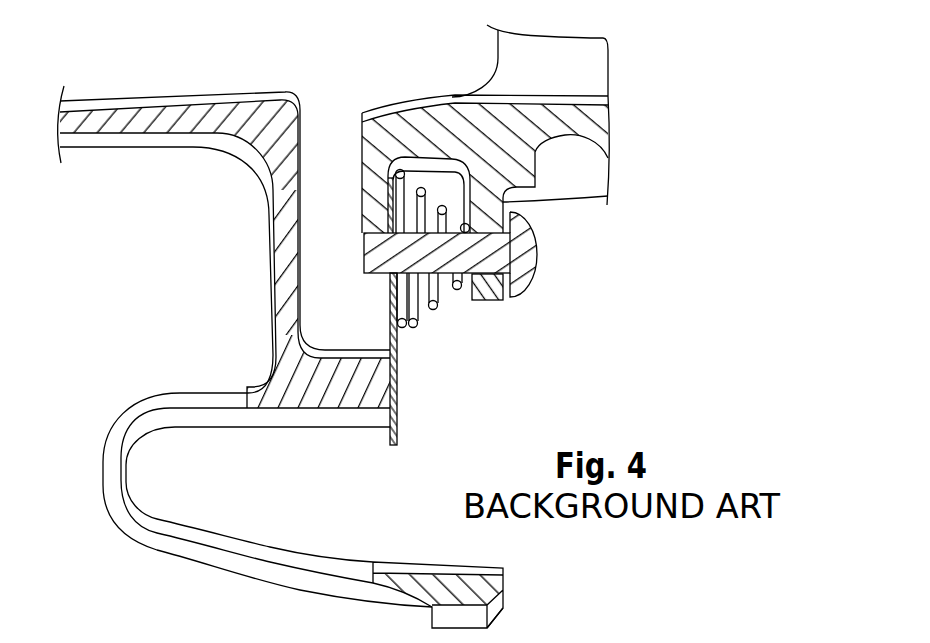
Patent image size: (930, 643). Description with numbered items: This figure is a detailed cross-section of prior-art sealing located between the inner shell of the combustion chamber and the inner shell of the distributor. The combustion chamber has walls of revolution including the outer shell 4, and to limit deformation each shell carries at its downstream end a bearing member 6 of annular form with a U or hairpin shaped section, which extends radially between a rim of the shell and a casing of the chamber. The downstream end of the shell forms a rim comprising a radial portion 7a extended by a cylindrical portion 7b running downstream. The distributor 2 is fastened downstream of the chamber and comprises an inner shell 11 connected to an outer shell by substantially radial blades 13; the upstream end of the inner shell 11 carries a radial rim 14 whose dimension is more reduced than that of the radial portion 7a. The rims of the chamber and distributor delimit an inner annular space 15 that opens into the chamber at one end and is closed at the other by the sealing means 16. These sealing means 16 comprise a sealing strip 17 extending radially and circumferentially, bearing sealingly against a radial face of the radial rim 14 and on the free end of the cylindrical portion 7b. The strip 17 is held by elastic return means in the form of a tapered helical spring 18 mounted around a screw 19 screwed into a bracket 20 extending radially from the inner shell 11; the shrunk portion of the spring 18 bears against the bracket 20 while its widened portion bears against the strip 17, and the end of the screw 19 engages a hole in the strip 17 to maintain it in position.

The distributor 2 is at (632, 36).
The outer shell 4 is at (115, 120).
The bearing member 6 is at (227, 562).
The radial portion 7a is at (290, 263).
The cylindrical portion 7b is at (330, 382).
The inner shell 11 is at (577, 120).
The radial blades 13 is at (565, 63).
The radial rim 14 is at (383, 222).
The inner annular space 15 is at (331, 120).
The sealing means 16 is at (546, 354).
The sealing strip 17 is at (397, 341).
The helical spring 18 is at (436, 310).
The screw 19 is at (487, 257).
The bracket 20 is at (490, 295).